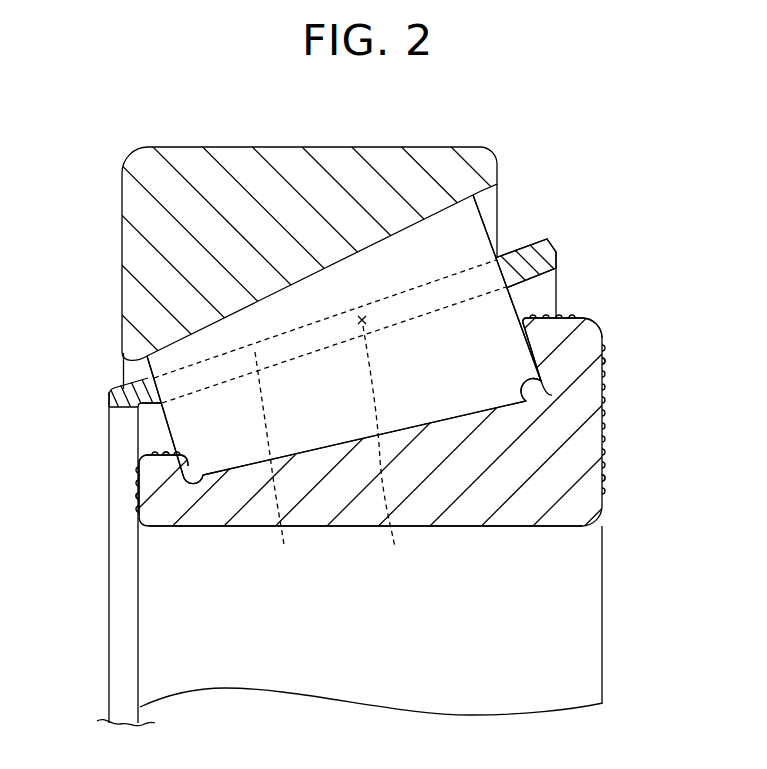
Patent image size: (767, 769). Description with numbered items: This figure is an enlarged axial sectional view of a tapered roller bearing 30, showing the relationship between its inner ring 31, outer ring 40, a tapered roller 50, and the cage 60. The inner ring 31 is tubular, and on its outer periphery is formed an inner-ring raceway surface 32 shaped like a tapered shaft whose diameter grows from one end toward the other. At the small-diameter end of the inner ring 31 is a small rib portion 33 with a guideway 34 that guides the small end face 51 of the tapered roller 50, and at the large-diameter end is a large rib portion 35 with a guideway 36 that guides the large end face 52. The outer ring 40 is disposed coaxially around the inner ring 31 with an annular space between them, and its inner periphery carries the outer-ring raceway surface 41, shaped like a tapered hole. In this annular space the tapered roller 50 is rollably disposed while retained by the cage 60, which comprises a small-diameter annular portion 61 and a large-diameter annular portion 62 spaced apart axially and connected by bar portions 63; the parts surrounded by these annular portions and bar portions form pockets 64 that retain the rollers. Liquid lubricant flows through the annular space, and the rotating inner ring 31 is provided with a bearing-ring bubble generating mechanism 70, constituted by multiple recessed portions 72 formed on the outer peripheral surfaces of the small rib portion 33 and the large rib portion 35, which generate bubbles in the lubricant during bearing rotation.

The tapered roller bearing 30 is at (116, 249).
The inner ring 31 is at (440, 536).
The inner-ring raceway surface 32 is at (326, 449).
The small rib portion 33 is at (156, 475).
The guideway 34 is at (181, 466).
The large rib portion 35 is at (574, 337).
The guideway 36 is at (545, 407).
The outer ring 40 is at (268, 142).
The outer-ring raceway surface 41 is at (304, 288).
The tapered roller 50 is at (348, 450).
The small end face 51 is at (135, 418).
The large end face 52 is at (514, 304).
The cage 60 is at (524, 240).
The small-diameter annular portion 61 is at (115, 398).
The large-diameter annular portion 62 is at (541, 262).
The bar portion 63 is at (276, 462).
The pocket 64 is at (387, 450).
The bearing-ring bubble generating mechanism 70 is at (578, 313).
The recessed portion 72 is at (598, 390).